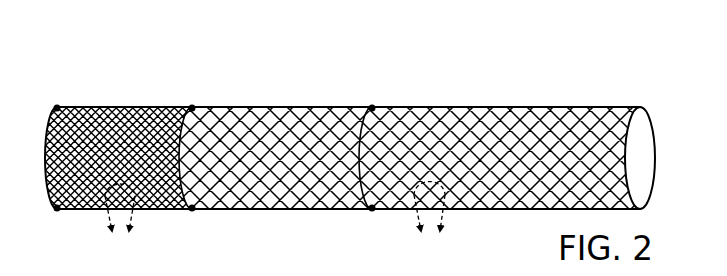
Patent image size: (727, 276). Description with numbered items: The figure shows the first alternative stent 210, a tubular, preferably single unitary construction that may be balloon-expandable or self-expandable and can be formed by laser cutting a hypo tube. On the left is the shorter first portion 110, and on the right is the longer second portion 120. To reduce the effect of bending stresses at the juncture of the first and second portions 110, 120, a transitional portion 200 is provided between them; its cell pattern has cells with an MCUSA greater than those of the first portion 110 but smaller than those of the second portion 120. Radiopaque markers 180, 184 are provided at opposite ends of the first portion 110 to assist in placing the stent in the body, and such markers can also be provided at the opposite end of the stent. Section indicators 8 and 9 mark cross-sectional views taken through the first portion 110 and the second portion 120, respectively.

The first alternative stent 210 is at (502, 75).
The first portion 110 is at (116, 107).
The second portion 120 is at (408, 122).
The radiopaque marker 180 is at (57, 107).
The radiopaque marker 184 is at (192, 209).
The transitional portion 200 is at (285, 118).
The section line for FIG. 8 is at (120, 219).
The section line for FIG. 9 is at (429, 218).